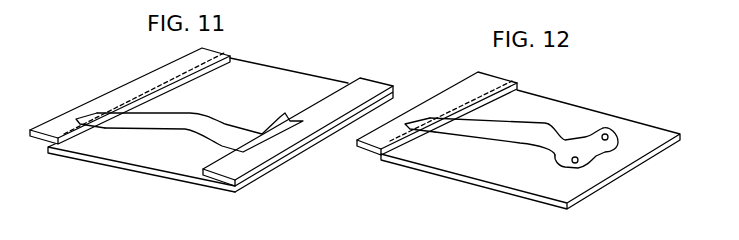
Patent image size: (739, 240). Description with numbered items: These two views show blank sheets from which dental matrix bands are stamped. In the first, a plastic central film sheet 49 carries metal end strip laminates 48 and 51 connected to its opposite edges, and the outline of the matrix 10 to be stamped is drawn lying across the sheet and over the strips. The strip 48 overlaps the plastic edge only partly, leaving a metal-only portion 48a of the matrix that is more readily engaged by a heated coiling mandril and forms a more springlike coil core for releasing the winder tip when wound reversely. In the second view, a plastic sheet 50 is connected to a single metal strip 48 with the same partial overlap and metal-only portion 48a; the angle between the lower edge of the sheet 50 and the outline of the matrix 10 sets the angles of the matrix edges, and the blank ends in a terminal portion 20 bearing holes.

In FIG. 11, the matrix 10 is at (188, 114).
In FIG. 12, the matrix 10 is at (530, 121).
In FIG. 12, the terminal end 20 is at (560, 161).
In FIG. 11, the metal strip 48 is at (37, 142).
In FIG. 12, the metal strip 48 is at (388, 153).
In FIG. 11, the metal-only portion 48a is at (108, 101).
In FIG. 12, the metal-only portion 48a is at (432, 102).
In FIG. 11, the plastic sheet 49 is at (147, 158).
In FIG. 12, the plastic sheet 50 is at (492, 173).
In FIG. 11, the metal strip 51 is at (233, 188).